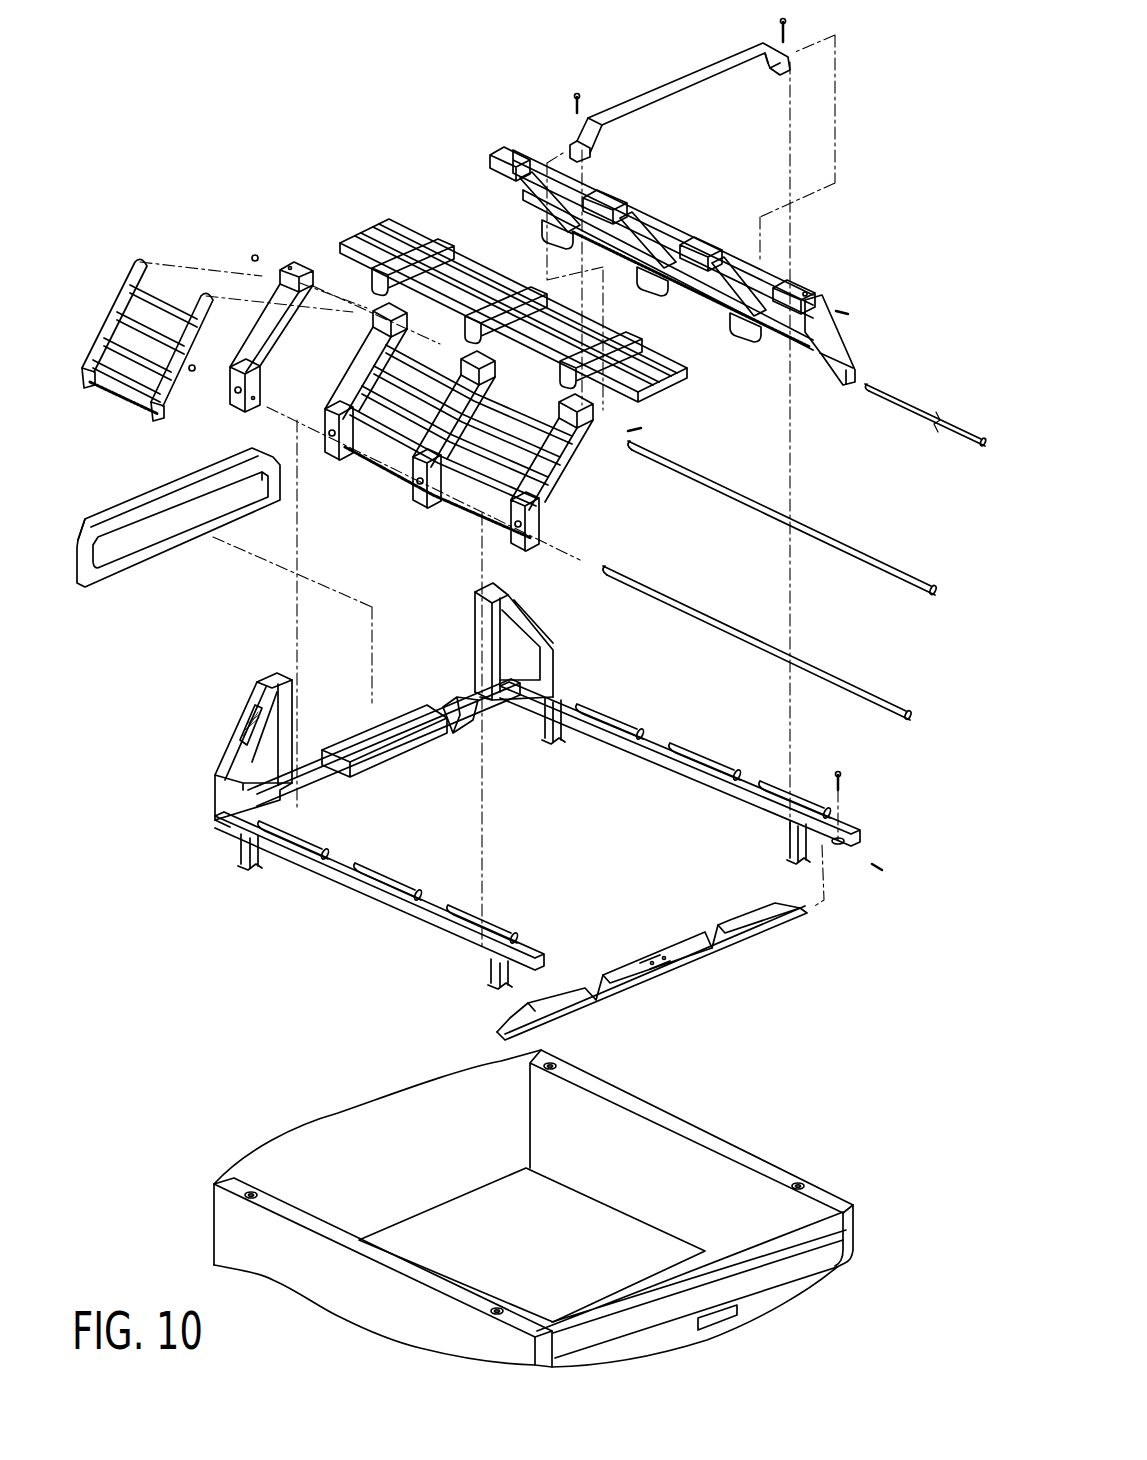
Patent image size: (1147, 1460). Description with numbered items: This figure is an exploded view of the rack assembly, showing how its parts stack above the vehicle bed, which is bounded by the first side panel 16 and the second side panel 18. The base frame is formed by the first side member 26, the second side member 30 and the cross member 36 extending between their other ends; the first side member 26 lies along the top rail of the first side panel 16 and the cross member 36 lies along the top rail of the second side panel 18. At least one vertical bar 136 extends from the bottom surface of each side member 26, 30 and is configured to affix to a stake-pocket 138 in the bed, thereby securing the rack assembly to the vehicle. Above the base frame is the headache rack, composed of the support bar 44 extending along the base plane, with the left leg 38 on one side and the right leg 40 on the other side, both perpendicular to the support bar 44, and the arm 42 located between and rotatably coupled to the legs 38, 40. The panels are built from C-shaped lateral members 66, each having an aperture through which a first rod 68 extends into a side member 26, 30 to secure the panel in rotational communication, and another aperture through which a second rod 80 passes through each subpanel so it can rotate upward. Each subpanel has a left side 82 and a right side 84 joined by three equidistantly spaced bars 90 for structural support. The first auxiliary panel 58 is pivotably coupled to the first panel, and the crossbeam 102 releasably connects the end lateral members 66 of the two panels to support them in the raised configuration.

The first side panel 16 is at (342, 1300).
The second side panel 18 is at (675, 1169).
The first side member 26 is at (347, 881).
The second side member 30 is at (653, 737).
The cross member 36 is at (687, 955).
The left leg 38 is at (259, 695).
The right leg 40 is at (510, 594).
The arm 42 is at (78, 527).
The support bar 44 is at (404, 727).
The first auxiliary panel 58 is at (368, 225).
The lateral member 66 is at (279, 282).
The first rod 68 is at (905, 403).
The second rod 80 is at (880, 560).
The left side 82 is at (127, 265).
The right side 84 is at (196, 312).
The bar 90 is at (163, 287).
The crossbeam 102 is at (677, 80).
The vertical bar 136 is at (249, 866).
The stake-pocket 138 is at (553, 1064).